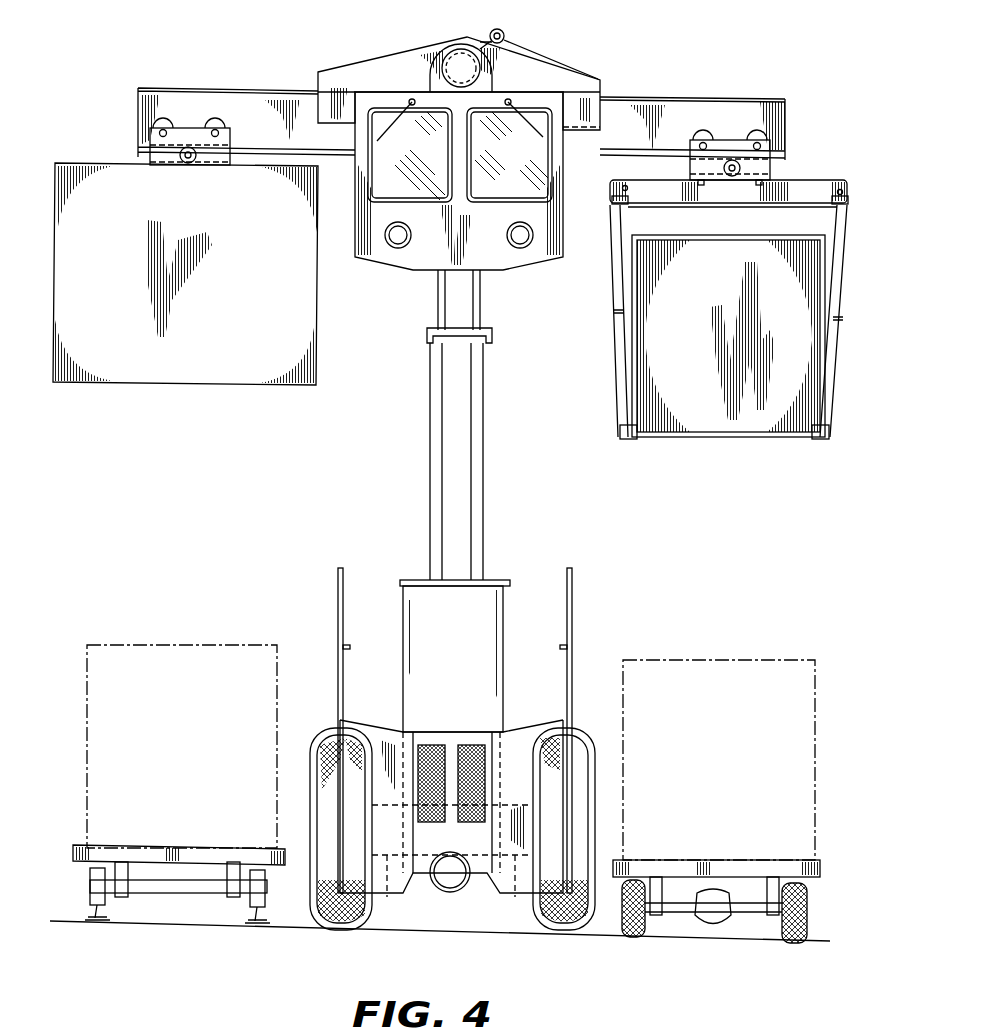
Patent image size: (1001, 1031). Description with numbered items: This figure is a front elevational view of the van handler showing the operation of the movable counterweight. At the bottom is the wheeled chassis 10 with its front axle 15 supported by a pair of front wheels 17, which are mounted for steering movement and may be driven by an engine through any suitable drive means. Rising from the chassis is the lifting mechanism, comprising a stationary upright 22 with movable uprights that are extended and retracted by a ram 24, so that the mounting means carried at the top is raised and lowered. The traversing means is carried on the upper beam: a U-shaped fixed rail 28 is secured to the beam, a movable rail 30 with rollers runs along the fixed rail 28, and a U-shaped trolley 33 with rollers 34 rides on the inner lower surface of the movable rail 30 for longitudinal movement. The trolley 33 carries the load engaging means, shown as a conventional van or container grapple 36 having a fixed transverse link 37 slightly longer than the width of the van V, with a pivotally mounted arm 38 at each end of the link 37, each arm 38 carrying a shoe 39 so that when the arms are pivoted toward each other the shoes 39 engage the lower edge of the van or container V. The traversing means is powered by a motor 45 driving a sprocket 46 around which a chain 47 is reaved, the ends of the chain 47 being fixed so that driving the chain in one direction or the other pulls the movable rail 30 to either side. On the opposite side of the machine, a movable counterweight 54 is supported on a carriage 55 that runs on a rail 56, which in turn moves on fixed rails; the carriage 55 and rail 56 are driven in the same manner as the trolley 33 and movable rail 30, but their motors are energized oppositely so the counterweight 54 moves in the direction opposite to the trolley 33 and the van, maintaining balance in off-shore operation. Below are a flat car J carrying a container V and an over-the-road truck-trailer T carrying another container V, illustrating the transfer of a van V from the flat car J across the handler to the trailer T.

The wheeled chassis 10 is at (443, 897).
The front axle 15 is at (385, 888).
The front wheels 17 is at (317, 930).
The stationary upright 22 is at (482, 618).
The ram 24 is at (468, 294).
The fixed rail 28 is at (593, 113).
The movable rail 30 is at (697, 98).
The trolley 33 is at (773, 173).
The rollers 34 is at (752, 132).
The van or container grapple 36 is at (701, 340).
The fixed transverse link 37 is at (718, 207).
The pivotally mounted arm 38 is at (610, 234).
The shoe 39 is at (635, 441).
The motor 45 is at (505, 33).
The sprocket 46 is at (490, 34).
The chain 47 is at (543, 53).
The movable counterweight 54 is at (248, 378).
The carriage 55 is at (192, 132).
The rail 56 is at (137, 112).
The van or container V is at (740, 427).
The flat car J is at (73, 853).
The truck-trailer T is at (818, 867).